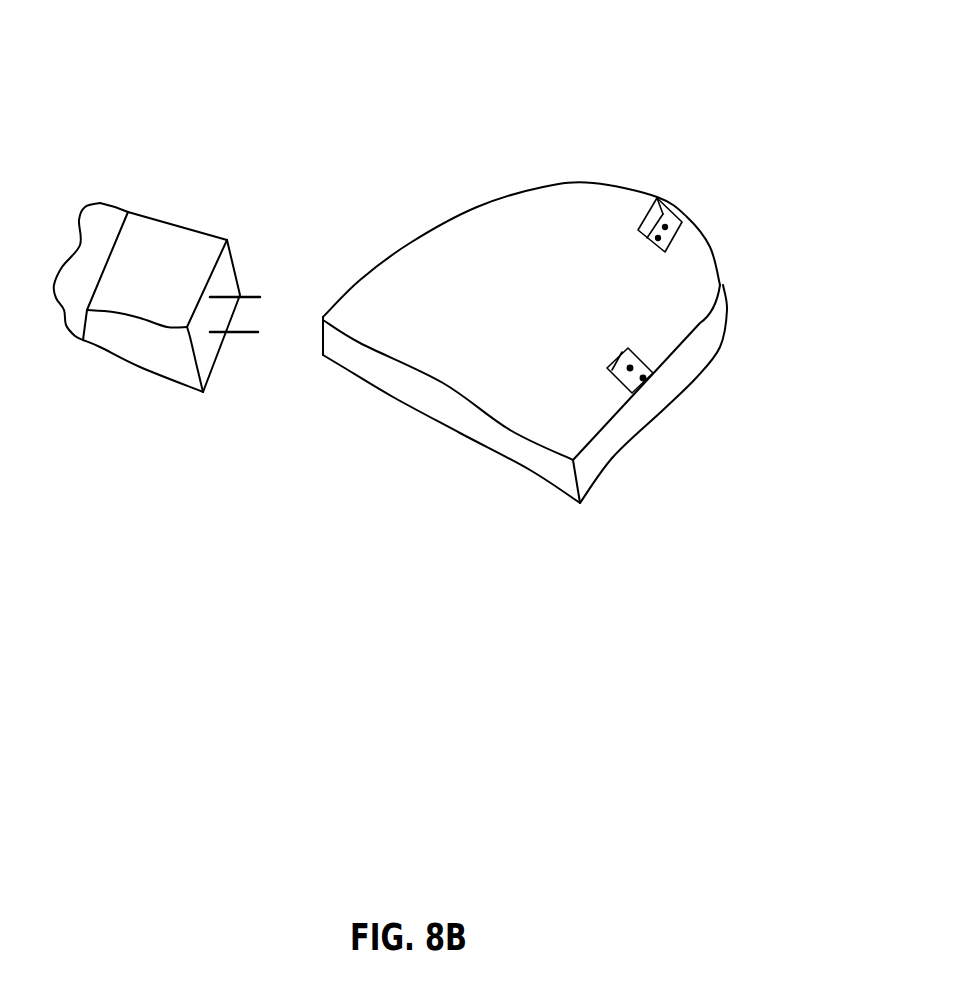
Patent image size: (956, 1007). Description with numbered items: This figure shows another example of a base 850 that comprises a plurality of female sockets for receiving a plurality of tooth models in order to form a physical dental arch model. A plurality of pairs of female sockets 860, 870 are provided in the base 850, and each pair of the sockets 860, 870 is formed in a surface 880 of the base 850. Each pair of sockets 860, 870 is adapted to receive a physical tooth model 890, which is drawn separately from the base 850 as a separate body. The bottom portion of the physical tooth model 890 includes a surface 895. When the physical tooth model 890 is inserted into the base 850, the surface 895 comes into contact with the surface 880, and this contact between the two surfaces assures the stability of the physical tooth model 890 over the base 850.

The base 850 is at (657, 127).
The female socket 860 is at (666, 349).
The female socket 870 is at (685, 367).
The surface 880 is at (646, 379).
The physical tooth model 890 is at (165, 177).
The surface 895 is at (217, 362).